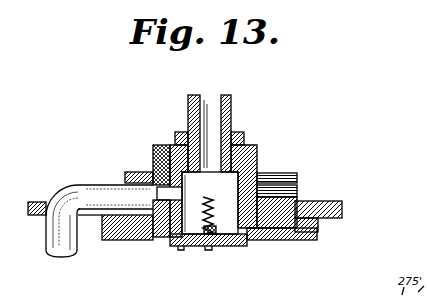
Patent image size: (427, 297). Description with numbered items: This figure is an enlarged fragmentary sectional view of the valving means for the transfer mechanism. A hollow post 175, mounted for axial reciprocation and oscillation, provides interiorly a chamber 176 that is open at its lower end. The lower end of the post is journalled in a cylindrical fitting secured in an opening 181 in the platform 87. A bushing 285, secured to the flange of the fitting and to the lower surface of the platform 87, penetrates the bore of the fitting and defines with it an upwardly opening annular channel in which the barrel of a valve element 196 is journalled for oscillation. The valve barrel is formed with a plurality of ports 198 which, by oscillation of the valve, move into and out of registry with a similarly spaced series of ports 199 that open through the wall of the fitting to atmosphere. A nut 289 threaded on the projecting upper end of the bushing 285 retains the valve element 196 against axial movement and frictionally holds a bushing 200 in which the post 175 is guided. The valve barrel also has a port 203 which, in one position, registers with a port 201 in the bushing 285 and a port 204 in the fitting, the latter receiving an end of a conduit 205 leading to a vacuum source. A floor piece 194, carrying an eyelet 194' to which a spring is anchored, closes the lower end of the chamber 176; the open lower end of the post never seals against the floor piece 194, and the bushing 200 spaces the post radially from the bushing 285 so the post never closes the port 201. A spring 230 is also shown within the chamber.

The hollow post 175 is at (231, 110).
The chamber 176 is at (206, 102).
The bushing 200 is at (184, 132).
The nut 289 is at (170, 147).
The port 203 is at (150, 172).
The conduit 205 is at (73, 248).
The port 204 is at (143, 237).
The bushing 285 is at (184, 246).
The eyelet 194' is at (214, 251).
The floor piece 194 is at (277, 249).
The port 201 is at (183, 197).
The spring 230 is at (213, 203).
The valve element 196 is at (258, 162).
The ports 198 is at (261, 172).
The ports 199 is at (262, 173).
The platform 87 is at (332, 199).
The opening 181 is at (292, 222).